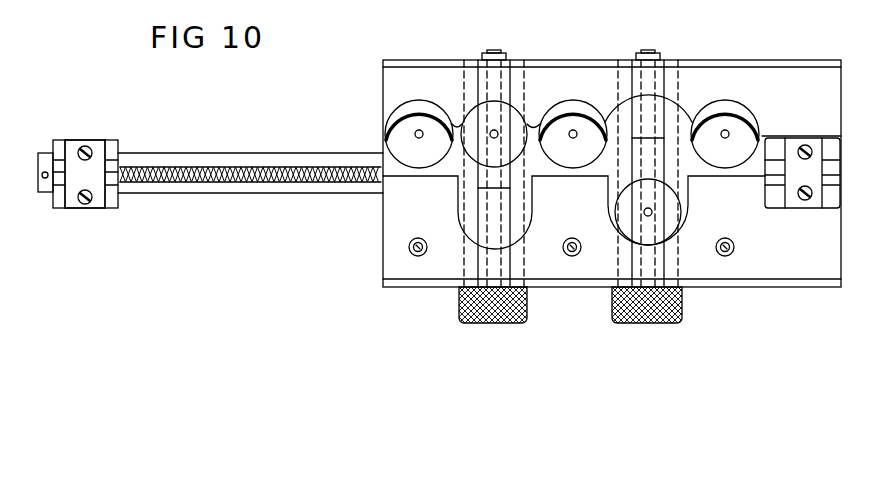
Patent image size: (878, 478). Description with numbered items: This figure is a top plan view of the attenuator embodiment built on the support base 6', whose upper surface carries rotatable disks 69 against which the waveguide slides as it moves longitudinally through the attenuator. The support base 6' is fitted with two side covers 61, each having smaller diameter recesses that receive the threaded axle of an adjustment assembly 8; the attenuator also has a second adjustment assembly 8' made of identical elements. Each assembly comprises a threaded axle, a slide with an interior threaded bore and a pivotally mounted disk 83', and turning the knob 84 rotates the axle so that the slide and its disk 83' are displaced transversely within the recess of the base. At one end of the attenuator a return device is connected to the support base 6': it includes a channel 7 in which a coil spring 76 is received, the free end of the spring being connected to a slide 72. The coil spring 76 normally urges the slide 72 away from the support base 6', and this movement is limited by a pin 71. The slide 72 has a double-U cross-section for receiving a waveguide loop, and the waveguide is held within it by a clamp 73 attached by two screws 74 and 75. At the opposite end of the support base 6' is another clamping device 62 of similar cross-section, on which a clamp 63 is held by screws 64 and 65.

The support base 6' is at (589, 173).
The channel 7 is at (233, 155).
The adjustment assembly 8 is at (490, 330).
The adjustment assembly 8' is at (645, 330).
The side cover 61 is at (393, 60).
The clamping device 62 is at (773, 205).
The clamp 63 is at (825, 152).
The screw 64 is at (807, 146).
The screw 65 is at (807, 201).
The rotatable disk 69 is at (398, 137).
The pin 71 is at (41, 175).
The slide 72 is at (57, 207).
The clamp 73 is at (72, 147).
The screw 74 is at (87, 148).
The screw 75 is at (86, 203).
The coil spring 76 is at (248, 177).
The pivotally mounted disk 83' is at (577, 171).
The knob 84 is at (460, 305).